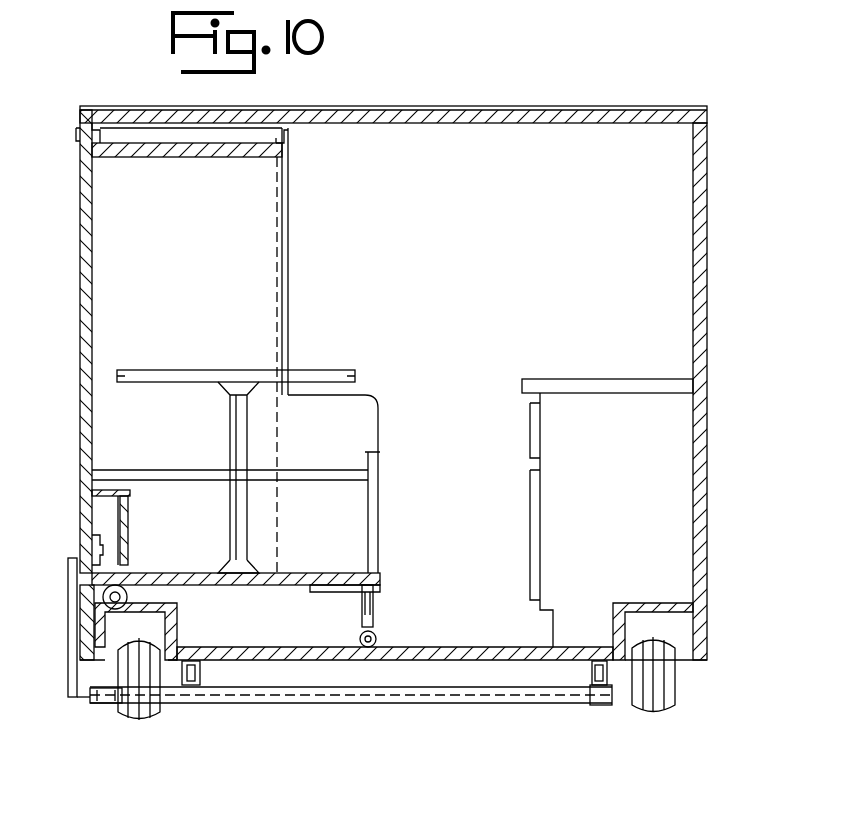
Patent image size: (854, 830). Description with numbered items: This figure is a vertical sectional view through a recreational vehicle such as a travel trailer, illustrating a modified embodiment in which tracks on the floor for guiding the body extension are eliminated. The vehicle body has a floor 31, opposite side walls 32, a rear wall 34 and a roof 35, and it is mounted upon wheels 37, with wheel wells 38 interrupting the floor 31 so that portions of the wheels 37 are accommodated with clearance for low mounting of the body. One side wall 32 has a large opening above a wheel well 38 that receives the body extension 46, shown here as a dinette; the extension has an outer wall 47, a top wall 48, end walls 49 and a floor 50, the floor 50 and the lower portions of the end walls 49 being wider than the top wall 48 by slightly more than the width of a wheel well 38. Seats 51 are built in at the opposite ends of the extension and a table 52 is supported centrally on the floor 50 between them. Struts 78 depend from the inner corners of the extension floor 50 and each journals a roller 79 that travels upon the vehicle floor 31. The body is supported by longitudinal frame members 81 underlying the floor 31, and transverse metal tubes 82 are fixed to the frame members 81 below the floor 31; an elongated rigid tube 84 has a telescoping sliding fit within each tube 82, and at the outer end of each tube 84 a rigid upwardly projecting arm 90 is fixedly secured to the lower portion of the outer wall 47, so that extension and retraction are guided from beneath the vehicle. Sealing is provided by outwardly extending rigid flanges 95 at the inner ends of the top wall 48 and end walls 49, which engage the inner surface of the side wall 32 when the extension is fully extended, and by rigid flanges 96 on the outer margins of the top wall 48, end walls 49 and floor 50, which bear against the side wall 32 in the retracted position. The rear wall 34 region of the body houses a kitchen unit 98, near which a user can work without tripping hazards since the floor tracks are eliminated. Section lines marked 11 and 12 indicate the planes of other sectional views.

The section line 11- 11 is at (447, 470).
The section line 12- 12 is at (54, 38).
The floor 31 is at (487, 650).
The side wall 32 is at (707, 245).
The rear wall 34 is at (630, 222).
The roof 35 is at (522, 118).
The wheels 37 is at (148, 715).
The wheel wells 38 is at (177, 626).
The body extension 46 is at (66, 281).
The outer wall 47 is at (80, 318).
The top wall 48 is at (213, 157).
The end walls 49 is at (262, 276).
The floor 50 is at (310, 578).
The seats 51 is at (192, 478).
The table 52 is at (200, 368).
The struts 78 is at (373, 603).
The roller 79 is at (376, 640).
The longitudinal frame members 81 is at (200, 678).
The transverse metal tubes 82 is at (592, 706).
The tube 84 is at (90, 701).
The arm 90 is at (72, 656).
The flanges 95 is at (284, 172).
The flanges 96 is at (78, 142).
The kitchen unit 98 is at (573, 405).